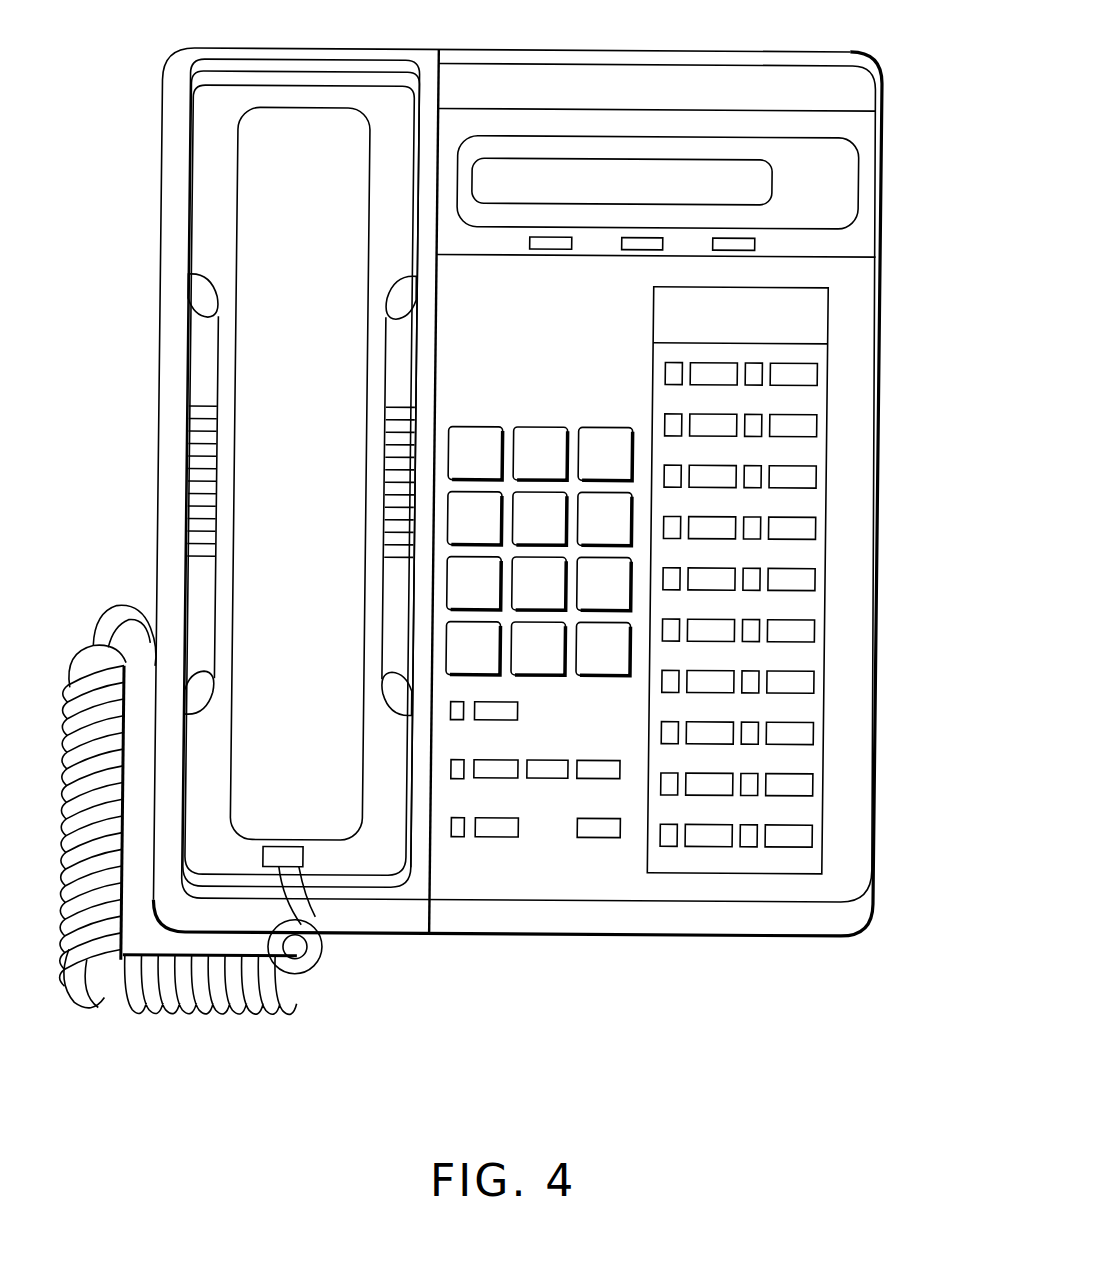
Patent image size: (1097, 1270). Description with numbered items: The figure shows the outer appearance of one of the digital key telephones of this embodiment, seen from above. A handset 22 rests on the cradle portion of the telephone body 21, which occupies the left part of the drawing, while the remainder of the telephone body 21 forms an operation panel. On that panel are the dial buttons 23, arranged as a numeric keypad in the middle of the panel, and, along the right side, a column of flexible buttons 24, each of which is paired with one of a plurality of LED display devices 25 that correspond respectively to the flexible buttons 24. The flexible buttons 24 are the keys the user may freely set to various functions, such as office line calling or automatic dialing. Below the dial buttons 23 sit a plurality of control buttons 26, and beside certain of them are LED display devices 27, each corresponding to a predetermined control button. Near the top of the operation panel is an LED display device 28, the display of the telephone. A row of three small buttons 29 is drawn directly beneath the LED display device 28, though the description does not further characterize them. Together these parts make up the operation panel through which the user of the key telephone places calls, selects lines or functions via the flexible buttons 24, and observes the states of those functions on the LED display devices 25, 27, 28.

The telephone body 21 is at (542, 905).
The handset 22 is at (244, 230).
The dial buttons 23 is at (452, 418).
The flexible buttons 24 is at (888, 351).
The LED display devices 25 is at (672, 794).
The control buttons 26 is at (454, 842).
The LED display devices 27 is at (451, 693).
The LED display device 28 is at (614, 169).
The soft keys 29 is at (752, 272).